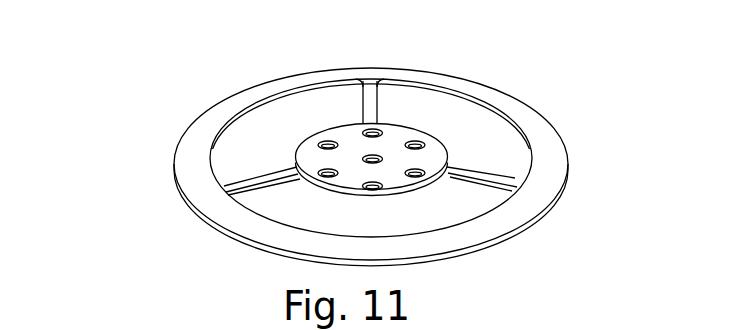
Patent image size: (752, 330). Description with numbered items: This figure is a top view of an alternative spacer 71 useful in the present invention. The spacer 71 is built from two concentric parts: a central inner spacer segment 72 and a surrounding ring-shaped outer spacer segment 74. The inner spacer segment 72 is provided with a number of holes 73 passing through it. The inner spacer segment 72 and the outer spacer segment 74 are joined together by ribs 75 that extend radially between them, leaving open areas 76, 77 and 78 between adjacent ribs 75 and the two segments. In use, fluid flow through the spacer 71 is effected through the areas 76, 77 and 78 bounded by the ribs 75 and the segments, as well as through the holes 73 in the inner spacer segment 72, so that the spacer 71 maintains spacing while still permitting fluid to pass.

The spacer 71 is at (532, 86).
The inner spacer segment 72 is at (345, 132).
The holes 73 is at (365, 183).
The outer spacer segment 74 is at (550, 151).
The ribs 75 is at (238, 176).
The area 76 is at (288, 154).
The area 77 is at (501, 154).
The area 78 is at (310, 219).